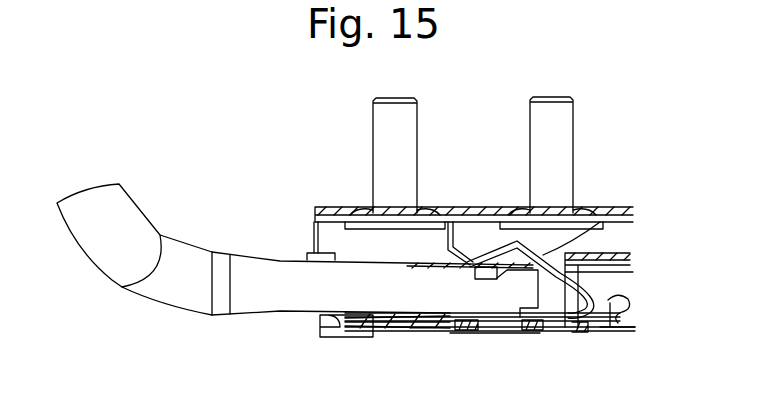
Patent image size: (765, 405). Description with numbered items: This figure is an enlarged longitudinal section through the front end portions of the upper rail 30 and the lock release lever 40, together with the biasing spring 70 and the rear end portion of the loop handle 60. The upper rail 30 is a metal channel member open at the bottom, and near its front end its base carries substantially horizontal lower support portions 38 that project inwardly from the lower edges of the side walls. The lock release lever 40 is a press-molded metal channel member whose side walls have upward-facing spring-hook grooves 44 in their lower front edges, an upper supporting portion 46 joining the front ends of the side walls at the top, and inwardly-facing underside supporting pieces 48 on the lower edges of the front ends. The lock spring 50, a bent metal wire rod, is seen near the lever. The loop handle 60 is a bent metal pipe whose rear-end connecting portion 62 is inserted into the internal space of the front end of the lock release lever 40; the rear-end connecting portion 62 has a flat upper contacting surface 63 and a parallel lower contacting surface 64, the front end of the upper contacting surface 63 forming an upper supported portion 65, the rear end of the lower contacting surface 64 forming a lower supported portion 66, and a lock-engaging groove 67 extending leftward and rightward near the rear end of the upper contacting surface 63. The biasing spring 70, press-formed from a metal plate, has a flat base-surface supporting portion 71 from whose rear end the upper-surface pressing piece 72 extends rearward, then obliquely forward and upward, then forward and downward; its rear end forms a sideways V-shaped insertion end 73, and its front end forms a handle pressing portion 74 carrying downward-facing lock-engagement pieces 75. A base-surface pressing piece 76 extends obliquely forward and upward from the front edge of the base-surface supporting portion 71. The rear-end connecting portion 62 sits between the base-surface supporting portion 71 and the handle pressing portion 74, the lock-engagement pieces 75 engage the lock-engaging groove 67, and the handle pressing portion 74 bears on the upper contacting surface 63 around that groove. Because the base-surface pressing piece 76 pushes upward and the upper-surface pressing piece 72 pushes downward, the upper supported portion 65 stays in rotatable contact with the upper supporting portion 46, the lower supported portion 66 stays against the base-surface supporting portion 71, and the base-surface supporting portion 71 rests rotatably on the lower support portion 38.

The upper rail 30 is at (478, 207).
The lower support portion 38 is at (514, 333).
The lock release lever 40 is at (630, 251).
The spring-hook groove 44 is at (623, 328).
The upper supporting portion 46 is at (303, 246).
The underside supporting piece 48 is at (337, 338).
The lock spring 50 is at (626, 297).
The loop handle 60 is at (133, 208).
The rear-end connecting portion 62 is at (280, 313).
The upper contacting surface 63 is at (407, 262).
The lower contacting surface 64 is at (292, 314).
The upper supported portion 65 is at (321, 250).
The lower supported portion 66 is at (453, 333).
The lock-engaging groove 67 is at (472, 278).
The biasing spring 70 is at (452, 222).
The base-surface supporting portion 71 is at (493, 335).
The upper-surface pressing piece 72 is at (600, 220).
The insertion end 73 is at (580, 332).
The handle pressing portion 74 is at (475, 250).
The downward-facing lock-engagement piece 75 is at (489, 280).
The base-surface pressing piece 76 is at (383, 331).